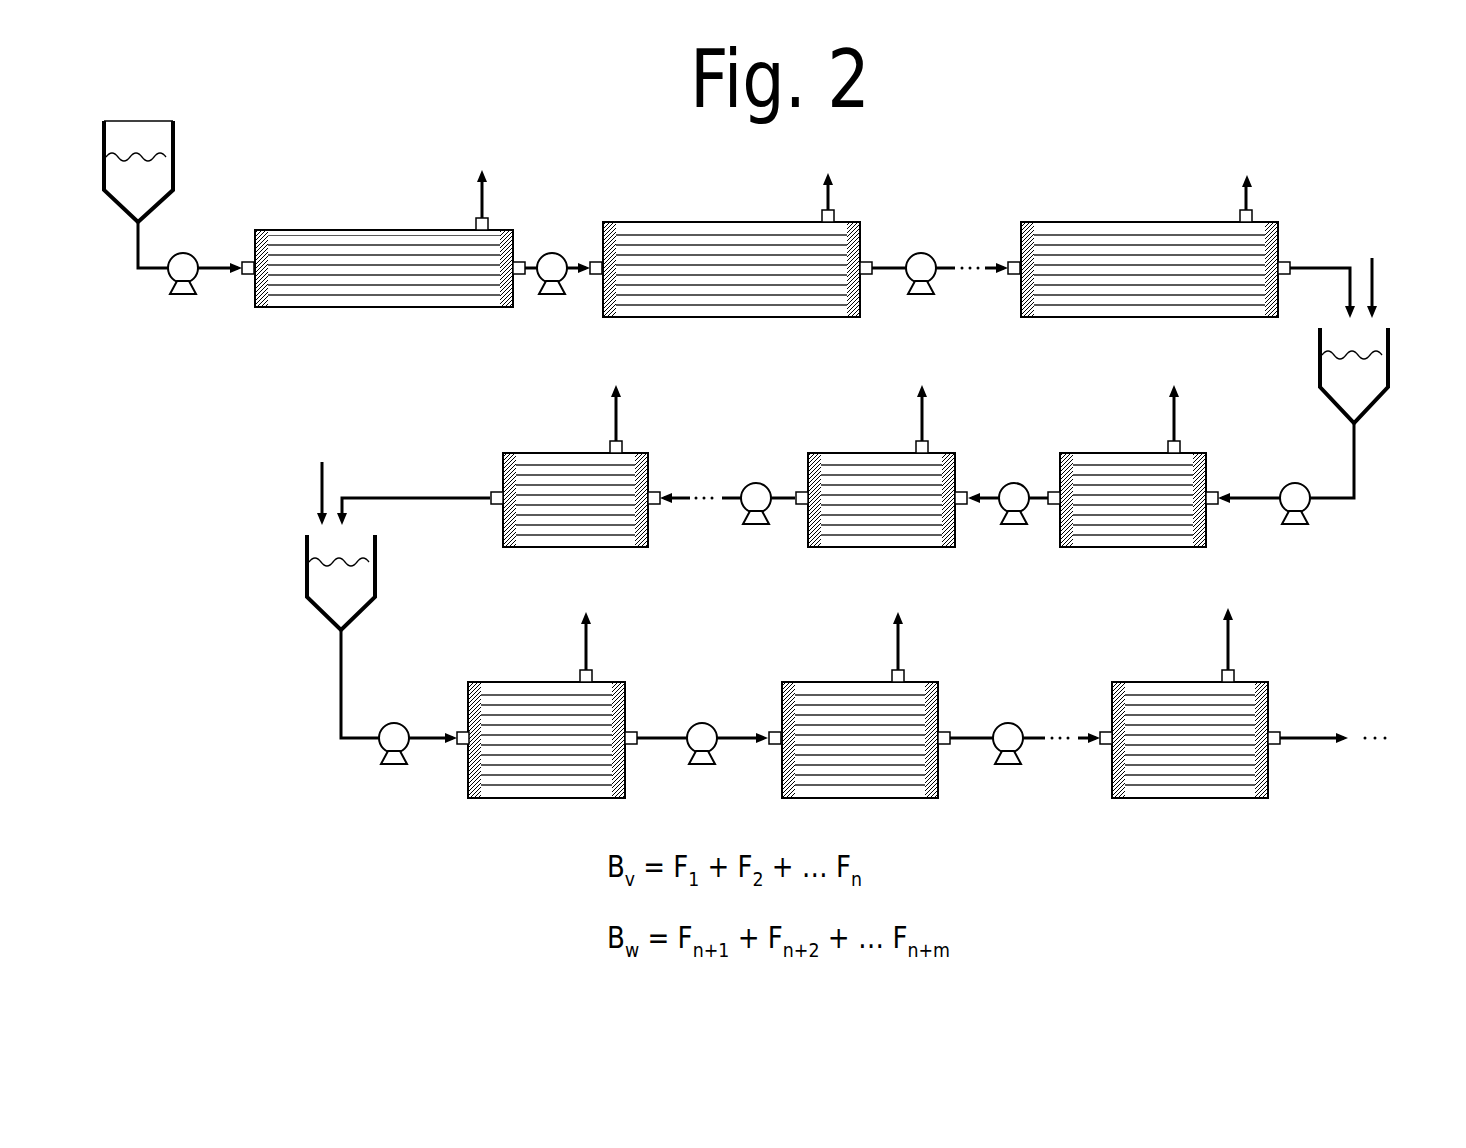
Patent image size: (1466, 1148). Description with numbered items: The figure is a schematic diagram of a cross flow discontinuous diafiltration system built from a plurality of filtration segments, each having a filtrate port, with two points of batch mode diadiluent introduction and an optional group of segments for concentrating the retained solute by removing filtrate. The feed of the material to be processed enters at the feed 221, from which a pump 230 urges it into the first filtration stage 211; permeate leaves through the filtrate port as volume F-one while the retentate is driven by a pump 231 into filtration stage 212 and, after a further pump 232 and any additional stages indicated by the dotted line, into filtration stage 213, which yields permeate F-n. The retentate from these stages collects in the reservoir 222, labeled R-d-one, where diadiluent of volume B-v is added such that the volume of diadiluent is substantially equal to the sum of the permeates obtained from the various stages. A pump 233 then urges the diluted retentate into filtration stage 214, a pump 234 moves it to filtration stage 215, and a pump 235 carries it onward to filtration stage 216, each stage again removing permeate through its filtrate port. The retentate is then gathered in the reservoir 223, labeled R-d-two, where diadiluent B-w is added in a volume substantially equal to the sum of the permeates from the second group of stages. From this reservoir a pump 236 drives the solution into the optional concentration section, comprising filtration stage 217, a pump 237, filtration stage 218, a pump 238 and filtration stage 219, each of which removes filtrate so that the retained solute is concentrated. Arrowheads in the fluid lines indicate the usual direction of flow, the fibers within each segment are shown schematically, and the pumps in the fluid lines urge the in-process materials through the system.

The filtration stage 211 is at (313, 222).
The filtration stage 212 is at (645, 214).
The filtration stage 213 is at (1083, 214).
The filtration stage 214 is at (1090, 444).
The filtration stage 215 is at (848, 444).
The filtration stage 216 is at (531, 444).
The filtration stage 217 is at (503, 672).
The filtration stage 218 is at (816, 672).
The filtration stage 219 is at (1134, 672).
The feed 221 is at (167, 116).
The reservoir 222 is at (1407, 315).
The reservoir 223 is at (292, 522).
The pump 230 is at (183, 306).
The pump 231 is at (552, 244).
The pump 232 is at (921, 244).
The pump 233 is at (1295, 474).
The pump 234 is at (1014, 474).
The pump 235 is at (756, 474).
The pump 236 is at (394, 709).
The pump 237 is at (702, 709).
The pump 238 is at (1008, 709).